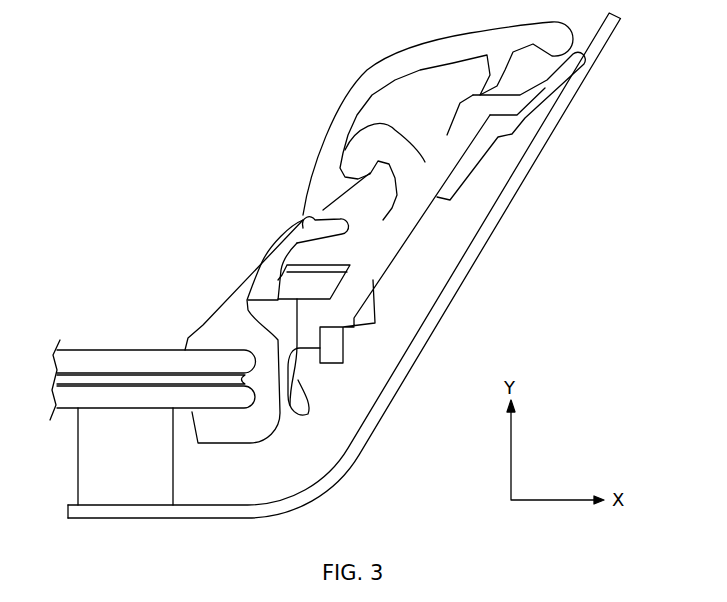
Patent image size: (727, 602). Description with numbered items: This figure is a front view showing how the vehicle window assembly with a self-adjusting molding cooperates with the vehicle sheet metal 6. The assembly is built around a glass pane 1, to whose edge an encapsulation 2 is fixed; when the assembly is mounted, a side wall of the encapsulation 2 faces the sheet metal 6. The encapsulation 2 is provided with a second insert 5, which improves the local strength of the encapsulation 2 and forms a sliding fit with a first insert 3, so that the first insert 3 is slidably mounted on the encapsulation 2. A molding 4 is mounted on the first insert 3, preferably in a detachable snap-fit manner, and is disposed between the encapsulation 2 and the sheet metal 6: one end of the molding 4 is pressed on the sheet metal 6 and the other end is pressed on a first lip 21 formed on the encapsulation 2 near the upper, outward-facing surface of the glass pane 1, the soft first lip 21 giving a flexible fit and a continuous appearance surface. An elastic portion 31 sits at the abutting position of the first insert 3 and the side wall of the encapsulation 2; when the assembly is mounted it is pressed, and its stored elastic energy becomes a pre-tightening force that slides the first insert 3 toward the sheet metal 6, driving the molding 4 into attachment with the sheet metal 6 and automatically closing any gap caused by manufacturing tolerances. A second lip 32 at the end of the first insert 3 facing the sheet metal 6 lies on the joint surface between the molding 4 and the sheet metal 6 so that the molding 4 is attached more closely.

The glass pane 1 is at (150, 368).
The encapsulation 2 is at (215, 330).
The first lip 21 is at (317, 222).
The first insert 3 is at (398, 228).
The elastic portion 31 is at (293, 403).
The second lip 32 is at (523, 115).
The molding 4 is at (355, 100).
The second insert 5 is at (272, 328).
The sheet metal 6 is at (338, 470).